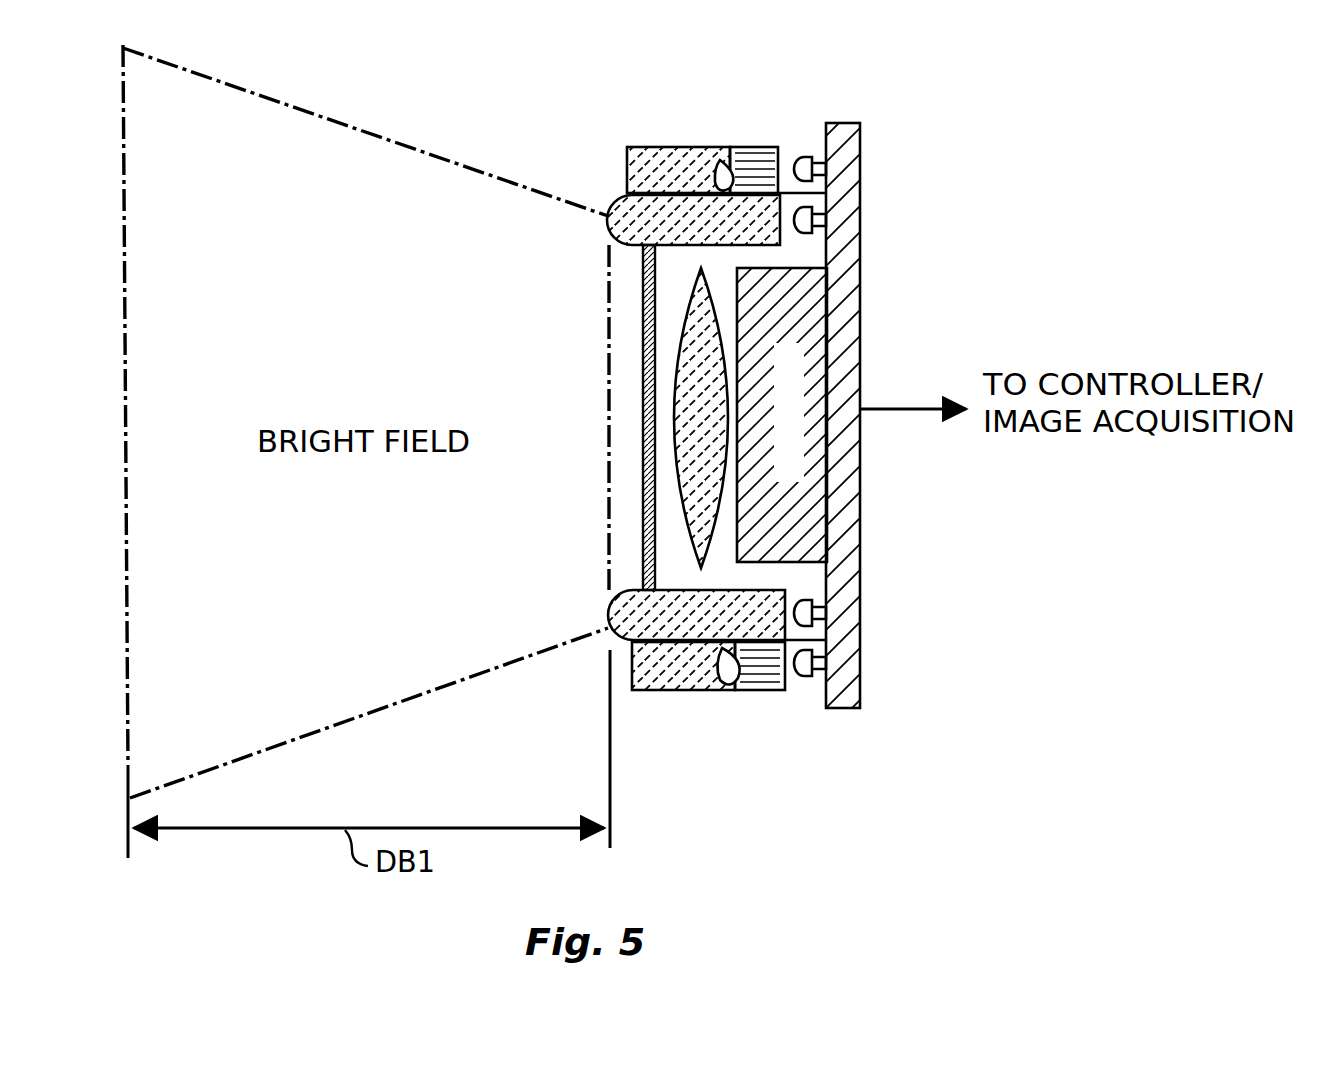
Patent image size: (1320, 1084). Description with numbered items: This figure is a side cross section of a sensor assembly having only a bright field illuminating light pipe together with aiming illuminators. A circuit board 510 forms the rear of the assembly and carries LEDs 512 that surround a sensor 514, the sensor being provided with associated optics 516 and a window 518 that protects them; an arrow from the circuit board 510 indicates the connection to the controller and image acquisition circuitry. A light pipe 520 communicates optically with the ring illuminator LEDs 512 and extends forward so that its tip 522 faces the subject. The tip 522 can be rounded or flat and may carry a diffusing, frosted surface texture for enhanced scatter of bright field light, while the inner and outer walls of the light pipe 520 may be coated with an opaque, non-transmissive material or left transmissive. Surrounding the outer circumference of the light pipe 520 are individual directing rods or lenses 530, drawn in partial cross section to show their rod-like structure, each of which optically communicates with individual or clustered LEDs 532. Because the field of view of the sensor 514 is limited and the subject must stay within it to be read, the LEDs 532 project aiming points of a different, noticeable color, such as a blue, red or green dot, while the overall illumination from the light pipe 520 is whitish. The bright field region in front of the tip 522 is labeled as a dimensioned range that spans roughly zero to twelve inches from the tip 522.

The circuit board 510 is at (852, 250).
The LEDs 512 is at (798, 213).
The sensor 514 is at (860, 468).
The optics 516 is at (697, 540).
The window 518 is at (643, 510).
The light pipe 520 is at (677, 192).
The tip 522 is at (612, 205).
The directing rods/lenses 530 is at (705, 160).
The aiming LEDs 532 is at (803, 155).